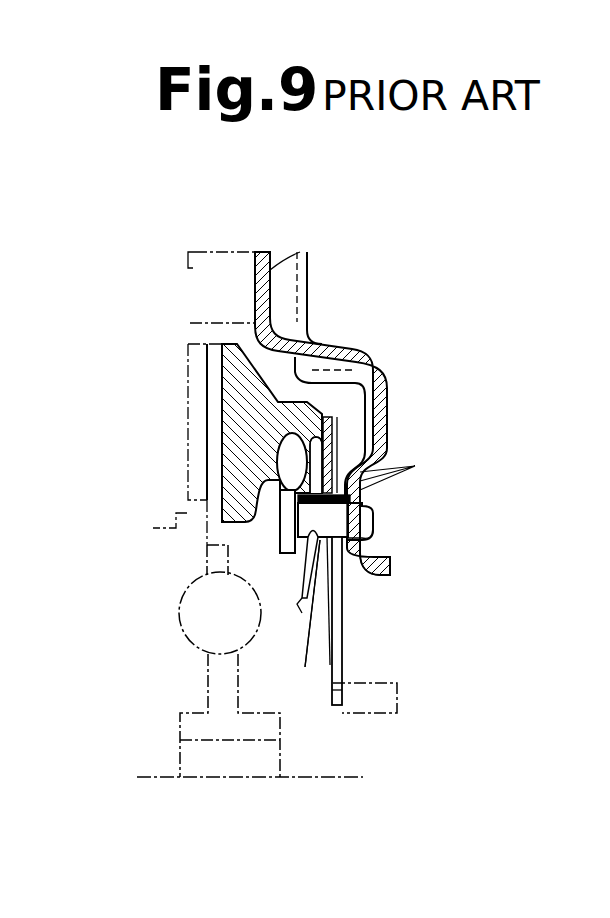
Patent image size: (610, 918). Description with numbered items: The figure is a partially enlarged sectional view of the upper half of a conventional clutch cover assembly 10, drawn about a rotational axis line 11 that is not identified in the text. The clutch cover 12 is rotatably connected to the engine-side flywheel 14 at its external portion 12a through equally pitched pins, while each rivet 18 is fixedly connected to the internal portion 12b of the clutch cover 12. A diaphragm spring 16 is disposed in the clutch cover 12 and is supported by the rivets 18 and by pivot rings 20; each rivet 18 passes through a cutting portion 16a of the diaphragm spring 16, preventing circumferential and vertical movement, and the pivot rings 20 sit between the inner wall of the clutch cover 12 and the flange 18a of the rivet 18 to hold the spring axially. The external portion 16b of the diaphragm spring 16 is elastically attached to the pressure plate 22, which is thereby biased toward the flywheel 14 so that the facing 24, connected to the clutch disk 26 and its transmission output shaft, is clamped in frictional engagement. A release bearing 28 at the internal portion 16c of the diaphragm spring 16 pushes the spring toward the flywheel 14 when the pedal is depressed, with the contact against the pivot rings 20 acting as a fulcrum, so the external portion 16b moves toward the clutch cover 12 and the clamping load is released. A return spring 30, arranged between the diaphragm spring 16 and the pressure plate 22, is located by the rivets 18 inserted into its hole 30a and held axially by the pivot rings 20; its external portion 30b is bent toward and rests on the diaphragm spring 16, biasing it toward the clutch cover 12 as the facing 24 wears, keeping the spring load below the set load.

The clutch cover assembly 10 is at (432, 275).
The transmission case 11 is at (333, 777).
The clutch cover 12 is at (360, 348).
The external portion of the clutch cover 12a is at (307, 252).
The internal portion of the clutch cover 12b is at (383, 580).
The flywheel 14 is at (188, 475).
The diaphragm spring 16 is at (342, 613).
The cutting portion of the diaphragm spring 16a is at (374, 545).
The external portion of the diaphragm spring 16b is at (330, 420).
The internal portion of the diaphragm spring 16c is at (342, 672).
The rivet 18 is at (374, 518).
The flange of the rivet 18a is at (268, 455).
The pivot ring 20 is at (422, 463).
The pressure plate 22 is at (247, 525).
The facing 24 is at (217, 503).
The clutch disk 26 is at (208, 663).
The release bearing 28 is at (397, 683).
The return spring 30 is at (302, 604).
The hole of the return spring 30a is at (293, 627).
The external portion of the return spring 30b is at (290, 412).